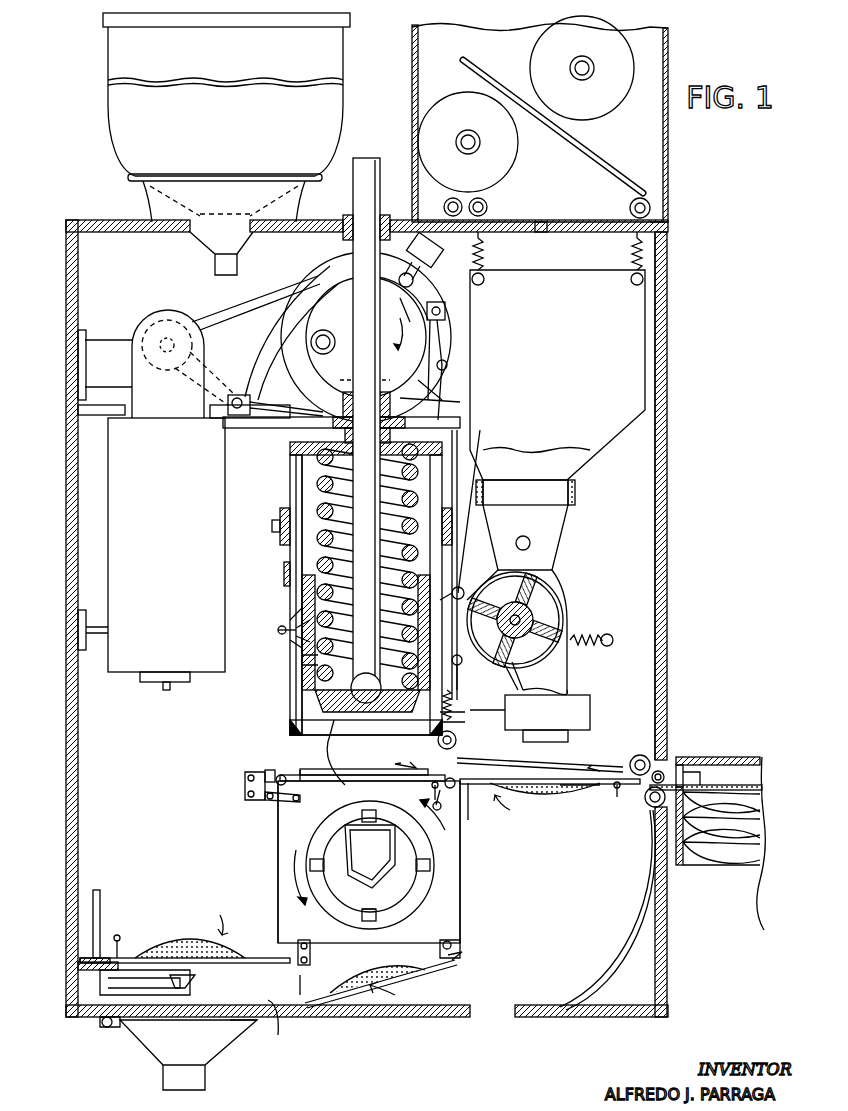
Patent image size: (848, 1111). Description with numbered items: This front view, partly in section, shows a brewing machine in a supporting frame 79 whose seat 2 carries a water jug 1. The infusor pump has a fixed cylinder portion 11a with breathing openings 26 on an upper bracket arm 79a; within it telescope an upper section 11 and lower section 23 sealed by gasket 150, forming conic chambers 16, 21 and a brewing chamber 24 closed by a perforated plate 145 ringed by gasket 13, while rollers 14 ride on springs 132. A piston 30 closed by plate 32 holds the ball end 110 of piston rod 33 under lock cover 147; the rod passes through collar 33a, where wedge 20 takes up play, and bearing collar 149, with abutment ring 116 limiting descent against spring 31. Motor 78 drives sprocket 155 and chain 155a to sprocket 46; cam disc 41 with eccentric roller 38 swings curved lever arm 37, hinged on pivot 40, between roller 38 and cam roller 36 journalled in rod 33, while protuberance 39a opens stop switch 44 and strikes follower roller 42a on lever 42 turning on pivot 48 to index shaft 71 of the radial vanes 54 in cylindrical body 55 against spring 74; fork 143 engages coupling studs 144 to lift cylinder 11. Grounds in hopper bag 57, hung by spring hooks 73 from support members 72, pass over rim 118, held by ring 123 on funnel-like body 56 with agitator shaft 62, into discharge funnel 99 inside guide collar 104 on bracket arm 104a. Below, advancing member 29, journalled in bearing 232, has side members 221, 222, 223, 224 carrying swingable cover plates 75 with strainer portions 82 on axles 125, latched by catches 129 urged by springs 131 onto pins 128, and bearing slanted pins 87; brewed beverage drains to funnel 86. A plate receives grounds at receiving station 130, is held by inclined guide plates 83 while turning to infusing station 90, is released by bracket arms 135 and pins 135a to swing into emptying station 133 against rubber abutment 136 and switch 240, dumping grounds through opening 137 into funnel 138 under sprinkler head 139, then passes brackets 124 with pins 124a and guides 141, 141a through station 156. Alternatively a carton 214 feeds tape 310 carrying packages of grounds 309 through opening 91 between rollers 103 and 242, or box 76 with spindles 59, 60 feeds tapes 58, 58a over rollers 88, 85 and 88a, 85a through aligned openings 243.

The water jug 1 is at (118, 55).
The seat 2 is at (150, 204).
The upper cylinder section 11 is at (290, 546).
The fixed cylinder portion 11a is at (290, 458).
The projecting gasket 13 is at (300, 735).
The rollers 14 is at (456, 740).
The conic chamber 16 is at (302, 592).
The wedge 20 is at (385, 480).
The conic chamber 21 is at (300, 628).
The lower cylinder section 23 is at (292, 655).
The brewing chamber 24 is at (320, 685).
The breathing openings 26 is at (300, 445).
The advancing member 29 is at (440, 905).
The reciprocating piston 30 is at (266, 628).
The spring 31 is at (325, 473).
The plate 32 is at (300, 716).
The piston rod 33 is at (367, 162).
The collar 33a is at (343, 410).
The cam roller 36 is at (352, 282).
The curved lever arm 37 is at (270, 355).
The eccentric cam roller 38 is at (335, 352).
The protuberance 39a is at (445, 386).
The pivot 40 is at (237, 396).
The cam disc 41 is at (406, 299).
The lever 42 is at (458, 441).
The cam follower roller 42a is at (446, 315).
The stop switch 44 is at (432, 260).
The sprocket 46 is at (300, 400).
The pivot 48 is at (448, 365).
The radial vanes 54 is at (560, 612).
The cylindrical body 55 is at (557, 598).
The funnel-like body 56 is at (560, 530).
The hopper 57 is at (557, 375).
The filter tape 58 is at (655, 500).
The second tape 58a is at (462, 668).
The spindle 59 is at (582, 76).
The spindle 60 is at (468, 150).
The shaft 62 is at (529, 537).
The shaft 71 is at (525, 606).
The support members 72 is at (486, 245).
The spring hooks 73 is at (542, 222).
The spring 74 is at (592, 646).
The cover plate 75 is at (475, 760).
The box 76 is at (668, 138).
The electric motor 78 is at (166, 554).
The supporting frame 79 is at (668, 626).
The upper bracket arm 79a is at (226, 422).
The strainer portion 82 is at (586, 796).
The inclined guide plates 83 is at (595, 762).
The roller 85 is at (636, 756).
The roller 85a is at (463, 588).
The funnel 86 is at (369, 864).
The pins 87 is at (270, 770).
The roller 88 is at (630, 208).
The rollers 88a is at (471, 207).
The infusing station 90 is at (405, 754).
The opening 91 is at (662, 770).
The discharge funnel 99 is at (562, 694).
The roller 103 is at (666, 795).
The guide collar 104 is at (590, 714).
The bracket arm 104a is at (455, 704).
The ball end 110 is at (362, 703).
The abutment ring 116 is at (455, 405).
The frusto-conical rim 118 is at (525, 492).
The conically shaped ring 123 is at (575, 495).
The brackets 124 is at (310, 955).
The pins 124a is at (320, 1008).
The axle 125 is at (462, 955).
The pin 128 is at (432, 786).
The catches 129 is at (288, 803).
The grounds receiving station 130 is at (543, 802).
The coil spring 131 is at (284, 572).
The springs 132 is at (547, 718).
The emptying station 133 is at (169, 924).
The bracket arms 135 is at (244, 778).
The pins 135a is at (262, 803).
The rubber abutment member 136 is at (78, 966).
The opening 137 is at (245, 1022).
The funnel 138 is at (178, 1053).
The sprinkler head 139 is at (190, 986).
The straight guide 141 is at (287, 1022).
The guide 141a is at (648, 952).
The fork 143 is at (283, 496).
The coupling studs 144 is at (276, 512).
The perforated plate 145 is at (345, 785).
The threaded lock cover 147 is at (330, 738).
The guide bearing collar 149 is at (387, 218).
The gasket 150 is at (278, 630).
The output sprocket 155 is at (150, 318).
The chain 155a is at (244, 296).
The station 156 is at (435, 990).
The shipping carton 214 is at (730, 757).
The side member 221 is at (310, 776).
The side member 222 is at (278, 845).
The side member 223 is at (370, 931).
The side member 224 is at (460, 868).
The bearing 232 is at (665, 222).
The switch 240 is at (108, 982).
The roller 242 is at (680, 788).
The aligned openings 243 is at (468, 348).
The package of grounds 309 is at (760, 832).
The tape 310 is at (762, 787).